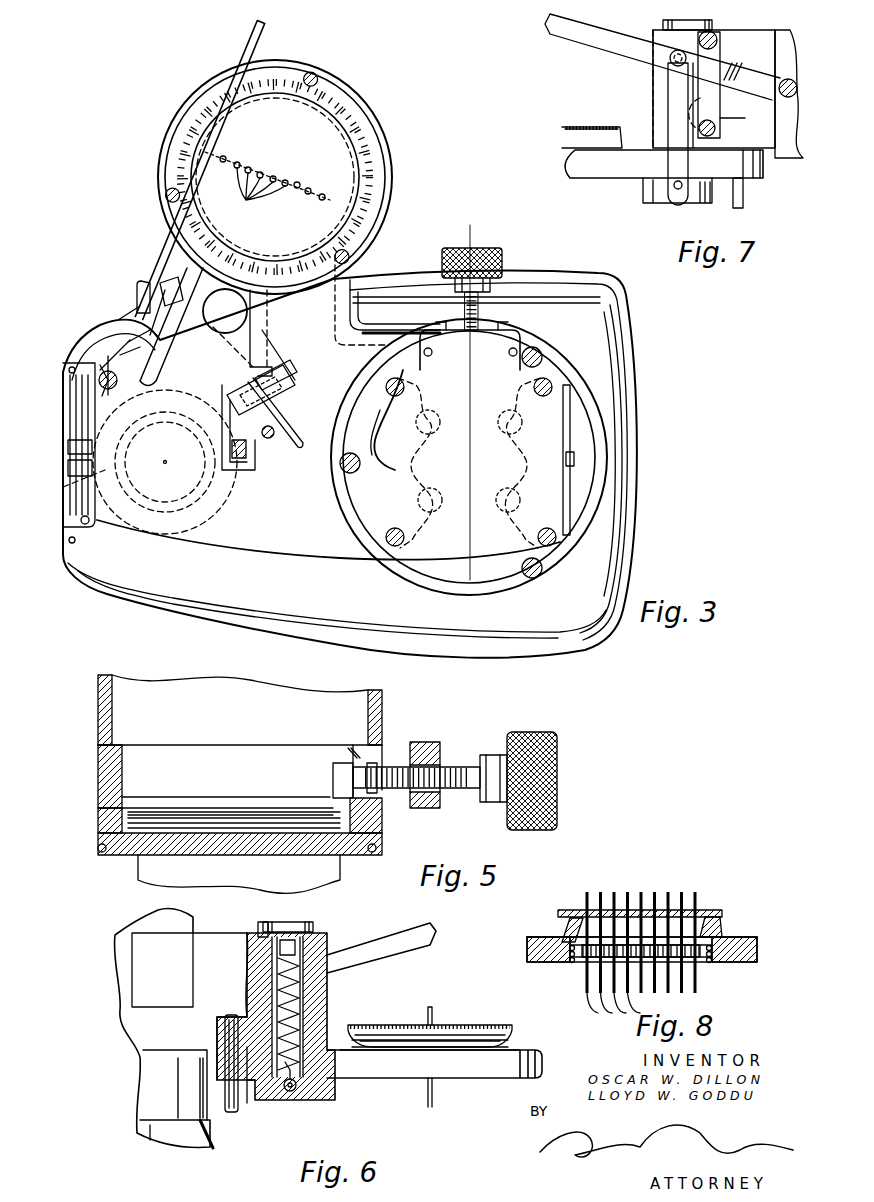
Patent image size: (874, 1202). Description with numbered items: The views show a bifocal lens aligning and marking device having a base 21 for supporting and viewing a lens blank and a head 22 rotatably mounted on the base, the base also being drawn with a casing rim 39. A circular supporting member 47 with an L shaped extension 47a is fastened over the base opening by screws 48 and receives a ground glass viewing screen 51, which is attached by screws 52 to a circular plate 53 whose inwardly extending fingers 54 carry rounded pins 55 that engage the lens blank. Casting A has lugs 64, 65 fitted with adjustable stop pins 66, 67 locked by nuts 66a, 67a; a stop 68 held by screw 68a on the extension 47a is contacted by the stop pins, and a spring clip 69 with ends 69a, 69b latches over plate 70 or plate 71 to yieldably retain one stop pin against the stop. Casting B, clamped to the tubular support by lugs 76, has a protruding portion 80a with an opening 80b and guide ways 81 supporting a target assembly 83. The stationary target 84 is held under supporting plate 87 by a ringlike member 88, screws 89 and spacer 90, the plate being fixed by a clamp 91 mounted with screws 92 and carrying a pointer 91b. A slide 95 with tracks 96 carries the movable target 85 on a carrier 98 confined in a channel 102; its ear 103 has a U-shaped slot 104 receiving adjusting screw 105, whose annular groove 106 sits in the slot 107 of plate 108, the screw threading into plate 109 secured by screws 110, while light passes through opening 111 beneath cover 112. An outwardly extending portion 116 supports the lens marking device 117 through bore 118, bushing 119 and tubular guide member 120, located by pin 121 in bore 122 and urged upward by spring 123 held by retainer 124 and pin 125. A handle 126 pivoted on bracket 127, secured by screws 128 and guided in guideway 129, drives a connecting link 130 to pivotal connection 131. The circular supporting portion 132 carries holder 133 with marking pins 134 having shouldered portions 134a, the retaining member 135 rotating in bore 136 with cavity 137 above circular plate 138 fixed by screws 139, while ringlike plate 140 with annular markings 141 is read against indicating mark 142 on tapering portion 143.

In FIG. 3, the base 21 is at (636, 311).
In FIG. 3, the head 22 is at (233, 533).
In FIG. 3, the casing rim 39 is at (628, 509).
In FIG. 3, the circular supporting member 47 is at (553, 368).
In FIG. 3, the L shaped extension 47a is at (350, 326).
In FIG. 3, the screws 48 is at (536, 347).
In FIG. 3, the ground glass viewing screen 51 is at (383, 444).
In FIG. 3, the screws 52 is at (393, 378).
In FIG. 3, the circular plate 53 is at (373, 407).
In FIG. 3, the fingers 54 is at (503, 539).
In FIG. 3, the pins 55 is at (469, 463).
In FIG. 3, the lug 64 is at (257, 468).
In FIG. 3, the lug 65 is at (95, 396).
In FIG. 3, the stop pin 66 is at (245, 430).
In FIG. 3, the locking nut 66a is at (243, 450).
In FIG. 3, the stop pin 67 is at (127, 400).
In FIG. 3, the locking nut 67a is at (125, 440).
In FIG. 3, the stop 68 is at (279, 403).
In FIG. 3, the screw 68a is at (284, 380).
In FIG. 3, the spring clip 69 is at (275, 370).
In FIG. 3, the end of spring clip 69a is at (291, 428).
In FIG. 3, the opposed end of spring clip 69b is at (212, 333).
In FIG. 3, the metal plate 70 is at (280, 444).
In FIG. 3, the plate 71 is at (82, 352).
In FIG. 3, the lugs 76 is at (72, 460).
In FIG. 3, the protruding portion 80a is at (520, 336).
In FIG. 5, the protruding portion 80a is at (424, 812).
In FIG. 5, the opening 80b is at (420, 748).
In FIG. 5, the guide ways 81 is at (120, 803).
In FIG. 5, the target assembly 83 is at (106, 864).
In FIG. 5, the stationary target 84 is at (310, 848).
In FIG. 5, the movable target 85 is at (231, 826).
In FIG. 5, the supporting plate 87 is at (383, 838).
In FIG. 5, the ringlike member 88 is at (130, 853).
In FIG. 5, the screws 89 is at (100, 855).
In FIG. 5, the spacer member 90 is at (100, 842).
In FIG. 3, the clamp 91 is at (571, 437).
In FIG. 3, the pointer 91b is at (575, 462).
In FIG. 3, the screws 92 is at (567, 435).
In FIG. 5, the slide 95 is at (98, 817).
In FIG. 5, the tracks 96 is at (197, 802).
In FIG. 5, the carrier 98 is at (203, 830).
In FIG. 5, the channel 102 is at (130, 823).
In FIG. 5, the ear 103 is at (353, 795).
In FIG. 5, the U-shaped slot 104 is at (356, 778).
In FIG. 3, the adjusting screw 105 is at (462, 306).
In FIG. 5, the adjusting screw 105 is at (453, 777).
In FIG. 5, the annular groove 106 is at (414, 765).
In FIG. 5, the U-shaped slot 107 is at (381, 801).
In FIG. 5, the plate 108 is at (371, 763).
In FIG. 3, the plate 109 is at (488, 322).
In FIG. 5, the plate 109 is at (441, 802).
In FIG. 3, the screws 110 is at (447, 329).
In FIG. 5, the opening 111 is at (255, 822).
In FIG. 3, the cover 112 is at (322, 548).
In FIG. 3, the outwardly extending portion 116 is at (155, 348).
In FIG. 7, the outwardly extending portion 116 is at (658, 90).
In FIG. 6, the outwardly extending portion 116 is at (320, 994).
In FIG. 3, the lens marking device 117 is at (382, 120).
In FIG. 7, the lens marking device 117 is at (580, 182).
In FIG. 6, the lens marking device 117 is at (451, 1084).
In FIG. 6, the bore 118 is at (327, 1015).
In FIG. 6, the bushing 119 is at (317, 972).
In FIG. 6, the tubular guide member 120 is at (291, 1095).
In FIG. 7, the locating pin 121 is at (746, 195).
In FIG. 6, the locating pin 121 is at (233, 1115).
In FIG. 6, the bore 122 is at (248, 1084).
In FIG. 6, the spring 123 is at (258, 933).
In FIG. 3, the shouldered retainer 124 is at (248, 303).
In FIG. 7, the shouldered retainer 124 is at (663, 25).
In FIG. 6, the shouldered retainer 124 is at (302, 925).
In FIG. 6, the pin 125 is at (292, 1101).
In FIG. 3, the handle 126 is at (246, 56).
In FIG. 7, the handle 126 is at (568, 40).
In FIG. 6, the handle 126 is at (414, 940).
In FIG. 3, the bracket 127 is at (158, 338).
In FIG. 7, the bracket 127 is at (726, 116).
In FIG. 3, the screws 128 is at (155, 305).
In FIG. 7, the screws 128 is at (719, 36).
In FIG. 3, the guideway 129 is at (138, 308).
In FIG. 7, the guideway 129 is at (717, 101).
In FIG. 3, the connecting link 130 is at (160, 268).
In FIG. 7, the connecting link 130 is at (672, 116).
In FIG. 7, the pivotal connection 131 is at (676, 200).
In FIG. 3, the circular supporting portion 132 is at (390, 166).
In FIG. 6, the circular supporting portion 132 is at (493, 1074).
In FIG. 8, the circular supporting portion 132 is at (757, 947).
In FIG. 3, the holder 133 is at (333, 180).
In FIG. 6, the holder 133 is at (452, 1021).
In FIG. 8, the holder 133 is at (718, 902).
In FIG. 3, the marking pins 134 is at (252, 192).
In FIG. 6, the marking pins 134 is at (428, 1098).
In FIG. 8, the marking pins 134 is at (600, 1013).
In FIG. 8, the shouldered portions 134a is at (620, 950).
In FIG. 8, the retaining member 135 is at (722, 930).
In FIG. 8, the bore 136 is at (560, 957).
In FIG. 8, the cavity 137 is at (592, 928).
In FIG. 8, the circular plate 138 is at (717, 964).
In FIG. 8, the screws 139 is at (572, 964).
In FIG. 3, the ringlike plate 140 is at (197, 110).
In FIG. 8, the ringlike plate 140 is at (560, 932).
In FIG. 3, the annular markings 141 is at (192, 124).
In FIG. 6, the indicating mark 142 is at (414, 1034).
In FIG. 6, the inwardly tapering portion 143 is at (510, 1038).
In FIG. 3, the casting A is at (242, 471).
In FIG. 6, the casting A is at (168, 1136).
In FIG. 5, the casting B is at (95, 751).
In FIG. 6, the casting B is at (142, 1072).